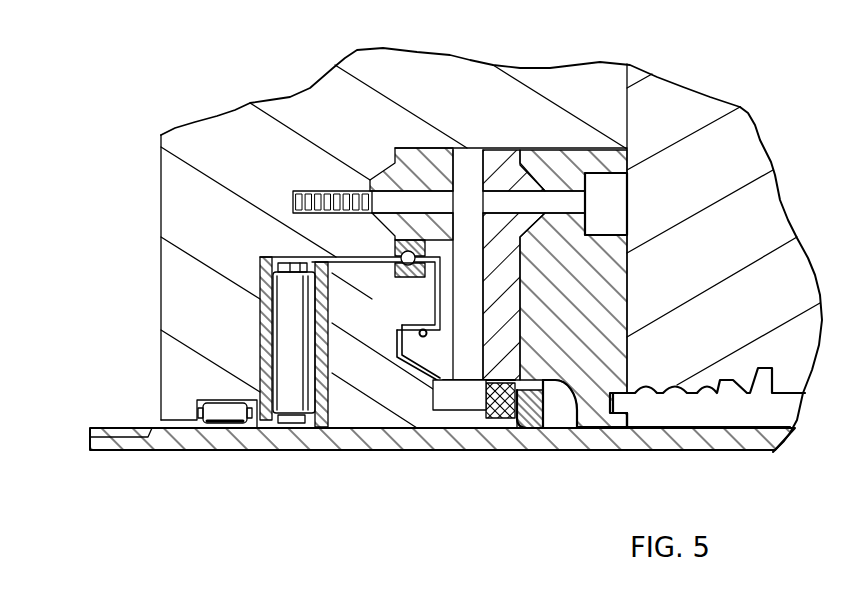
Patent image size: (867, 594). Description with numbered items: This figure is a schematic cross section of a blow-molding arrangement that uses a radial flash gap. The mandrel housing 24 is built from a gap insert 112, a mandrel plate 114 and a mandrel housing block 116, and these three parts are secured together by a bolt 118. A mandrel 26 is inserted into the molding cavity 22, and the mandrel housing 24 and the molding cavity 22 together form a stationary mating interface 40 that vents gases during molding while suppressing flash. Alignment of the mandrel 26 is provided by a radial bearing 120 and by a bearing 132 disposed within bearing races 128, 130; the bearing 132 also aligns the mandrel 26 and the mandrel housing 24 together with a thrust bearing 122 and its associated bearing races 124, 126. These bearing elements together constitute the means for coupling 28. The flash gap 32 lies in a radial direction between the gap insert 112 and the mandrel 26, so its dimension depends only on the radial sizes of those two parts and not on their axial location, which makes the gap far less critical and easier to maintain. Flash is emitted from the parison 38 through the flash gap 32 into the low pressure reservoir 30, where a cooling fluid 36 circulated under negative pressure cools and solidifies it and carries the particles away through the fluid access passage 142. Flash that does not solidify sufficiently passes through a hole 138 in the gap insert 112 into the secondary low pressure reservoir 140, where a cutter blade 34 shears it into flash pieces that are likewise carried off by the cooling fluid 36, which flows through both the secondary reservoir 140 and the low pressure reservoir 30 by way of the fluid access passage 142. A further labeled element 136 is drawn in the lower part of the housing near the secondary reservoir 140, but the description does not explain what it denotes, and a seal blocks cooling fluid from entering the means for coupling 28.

The molding cavity 22 is at (753, 96).
The mandrel housing 24 is at (461, 49).
The mandrel 26 is at (573, 437).
The means for coupling 28 is at (265, 440).
The low pressure reservoir 30 is at (555, 408).
The flash gap 32 is at (597, 427).
The cutter blade 34 is at (423, 337).
The cooling fluid 36 is at (563, 410).
The parison 38 is at (750, 410).
The stationary mating interface 40 is at (628, 277).
The gap insert 112 is at (620, 307).
The mandrel plate 114 is at (439, 156).
The mandrel housing block 116 is at (217, 118).
The bolt 118 is at (613, 200).
The radial bearing 120 is at (220, 413).
The thrust bearing 122 is at (297, 410).
The bearing race 124 is at (260, 277).
The bearing race 126 is at (322, 272).
The bearing race 128 is at (395, 275).
The bearing race 130 is at (408, 252).
The bearing 132 is at (407, 274).
The bent plate 136 is at (399, 360).
The hole 138 is at (530, 388).
The secondary low pressure reservoir 140 is at (435, 423).
The fluid access passage 142 is at (470, 157).